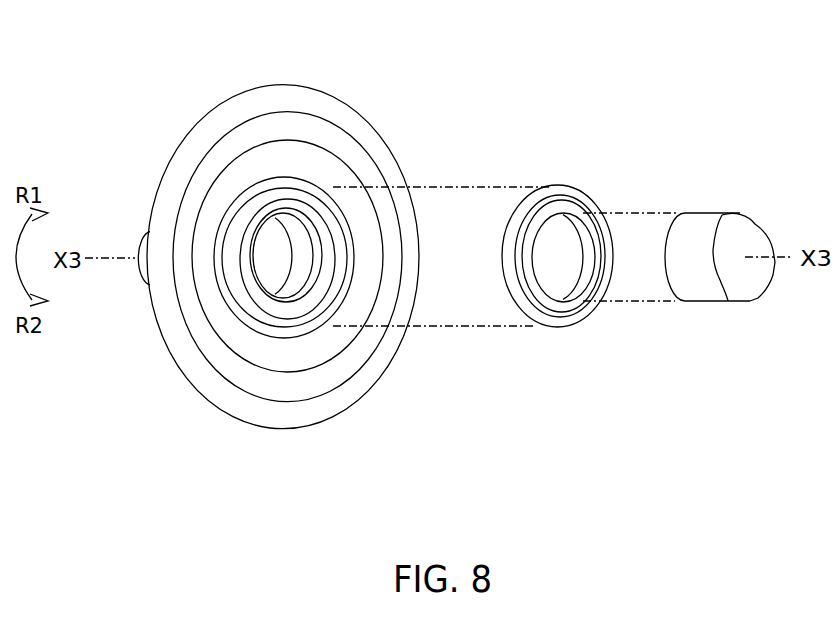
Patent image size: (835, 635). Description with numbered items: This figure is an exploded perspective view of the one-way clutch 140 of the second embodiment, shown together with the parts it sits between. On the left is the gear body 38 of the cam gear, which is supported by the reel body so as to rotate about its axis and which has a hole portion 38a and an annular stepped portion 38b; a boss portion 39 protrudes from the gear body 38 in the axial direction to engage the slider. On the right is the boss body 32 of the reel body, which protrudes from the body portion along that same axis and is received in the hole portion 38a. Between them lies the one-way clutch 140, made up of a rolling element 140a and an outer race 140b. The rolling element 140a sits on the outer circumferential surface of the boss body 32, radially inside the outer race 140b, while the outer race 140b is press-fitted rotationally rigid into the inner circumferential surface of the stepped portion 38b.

The gear body 38 is at (339, 103).
The hole portion 38a is at (292, 277).
The stepped portion 38b is at (304, 234).
The boss portion 39 is at (143, 273).
The one-way clutch 140 is at (588, 173).
The rolling element 140a is at (595, 217).
The outer race 140b is at (590, 315).
The boss body 32 is at (704, 213).